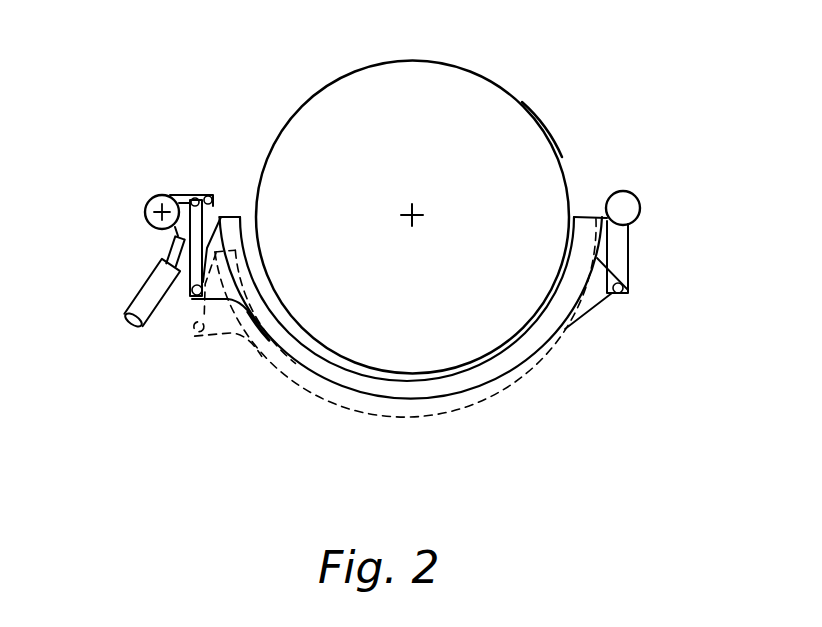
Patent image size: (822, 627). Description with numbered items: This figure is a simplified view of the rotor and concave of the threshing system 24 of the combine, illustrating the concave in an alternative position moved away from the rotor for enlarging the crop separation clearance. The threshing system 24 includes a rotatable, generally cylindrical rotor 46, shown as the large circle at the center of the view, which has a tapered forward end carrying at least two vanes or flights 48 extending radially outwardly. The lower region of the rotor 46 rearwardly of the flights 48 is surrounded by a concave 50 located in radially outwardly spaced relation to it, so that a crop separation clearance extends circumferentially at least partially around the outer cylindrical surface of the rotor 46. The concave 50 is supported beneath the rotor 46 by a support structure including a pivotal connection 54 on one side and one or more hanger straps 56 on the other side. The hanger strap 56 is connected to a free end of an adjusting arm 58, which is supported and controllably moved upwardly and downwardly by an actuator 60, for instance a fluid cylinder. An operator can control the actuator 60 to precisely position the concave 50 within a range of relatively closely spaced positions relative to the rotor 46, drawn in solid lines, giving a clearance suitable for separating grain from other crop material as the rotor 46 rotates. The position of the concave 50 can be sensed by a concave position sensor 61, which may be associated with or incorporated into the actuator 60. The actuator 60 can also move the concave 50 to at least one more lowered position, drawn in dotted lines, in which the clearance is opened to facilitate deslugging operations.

The threshing system 24 is at (521, 96).
The rotor 46 is at (560, 159).
The flights 48 is at (530, 367).
The concave 50 is at (383, 377).
The pivotal connection 54 is at (628, 286).
The hanger strap 56 is at (157, 240).
The adjusting arm 58 is at (188, 192).
The actuator 60 is at (99, 315).
The concave position sensor 61 is at (130, 303).